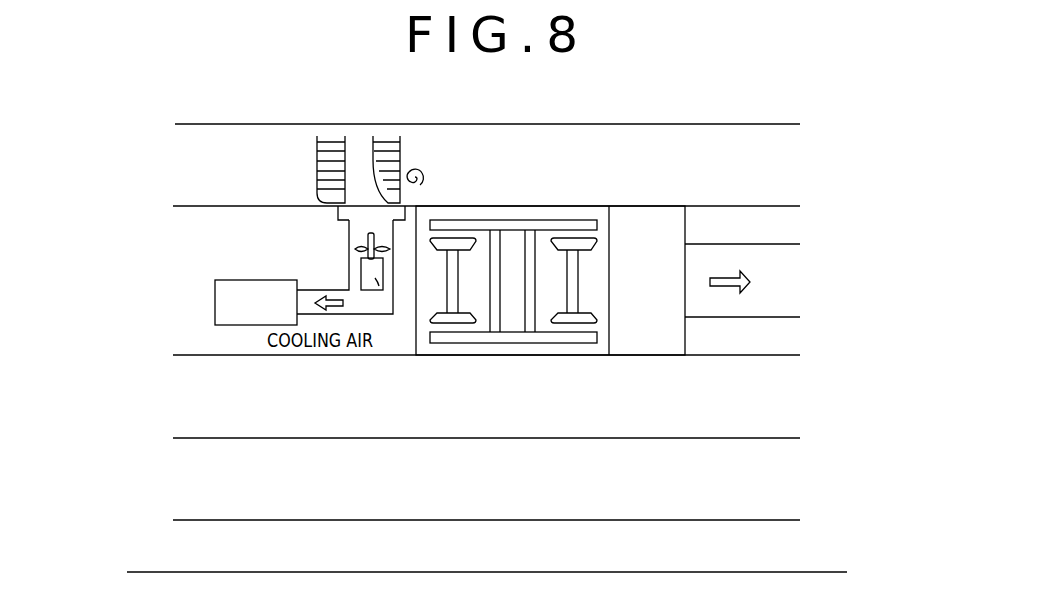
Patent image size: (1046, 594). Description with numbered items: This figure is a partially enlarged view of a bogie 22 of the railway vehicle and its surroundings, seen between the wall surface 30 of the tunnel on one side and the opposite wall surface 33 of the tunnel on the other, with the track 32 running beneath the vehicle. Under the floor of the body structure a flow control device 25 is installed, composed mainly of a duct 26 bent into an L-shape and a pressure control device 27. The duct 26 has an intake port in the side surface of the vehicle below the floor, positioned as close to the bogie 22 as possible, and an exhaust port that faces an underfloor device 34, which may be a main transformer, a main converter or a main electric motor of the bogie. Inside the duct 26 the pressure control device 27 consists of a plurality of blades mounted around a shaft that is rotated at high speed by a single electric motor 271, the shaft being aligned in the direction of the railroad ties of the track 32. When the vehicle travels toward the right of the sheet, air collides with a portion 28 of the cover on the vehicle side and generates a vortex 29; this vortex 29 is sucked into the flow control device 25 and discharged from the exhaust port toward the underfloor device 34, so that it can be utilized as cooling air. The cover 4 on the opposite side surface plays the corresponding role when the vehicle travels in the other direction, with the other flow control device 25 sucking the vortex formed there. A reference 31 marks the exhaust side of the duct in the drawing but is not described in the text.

The cover 4 is at (197, 218).
The bogie 22 is at (513, 220).
The flow control device 25 is at (295, 259).
The duct 26 is at (358, 300).
The pressure control device 27 is at (352, 237).
The portion of cover 28 is at (413, 207).
The vortex 29 is at (418, 165).
The wall surface of a tunnel 30 is at (667, 124).
The exhaust opening 31 is at (338, 212).
The track 32 is at (673, 438).
The wall surface of a tunnel 33 is at (615, 572).
The underfloor device 34 is at (215, 311).
The electric motor 271 is at (378, 280).